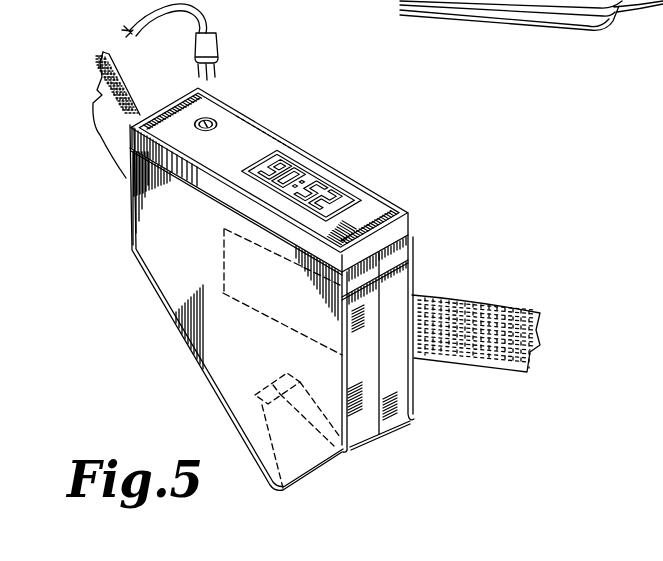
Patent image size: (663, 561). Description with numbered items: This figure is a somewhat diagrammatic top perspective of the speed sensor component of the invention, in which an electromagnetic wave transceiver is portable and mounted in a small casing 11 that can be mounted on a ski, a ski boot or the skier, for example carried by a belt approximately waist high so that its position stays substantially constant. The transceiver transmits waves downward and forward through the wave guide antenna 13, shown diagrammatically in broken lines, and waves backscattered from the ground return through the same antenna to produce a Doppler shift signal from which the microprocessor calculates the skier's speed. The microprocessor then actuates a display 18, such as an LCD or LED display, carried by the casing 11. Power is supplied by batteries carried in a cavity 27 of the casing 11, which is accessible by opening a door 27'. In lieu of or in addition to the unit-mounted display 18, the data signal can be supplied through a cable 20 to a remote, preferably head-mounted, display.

The casing 11 is at (192, 353).
The wave guide antenna 13 is at (262, 405).
The display 18 is at (330, 185).
The cable 20 is at (212, 20).
The cavity 27 is at (255, 292).
The door 27' is at (476, 312).